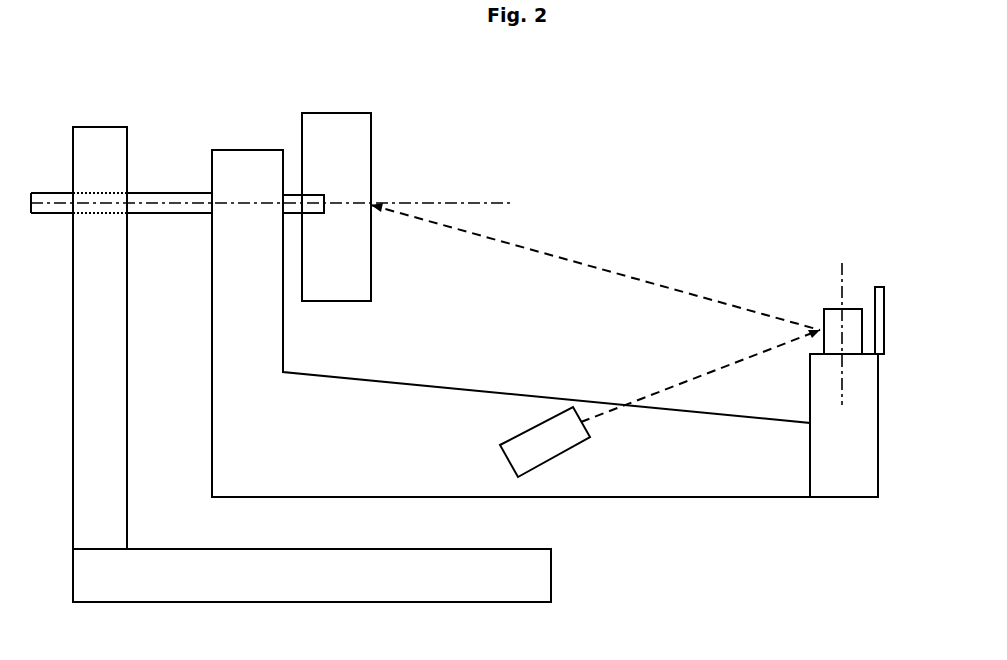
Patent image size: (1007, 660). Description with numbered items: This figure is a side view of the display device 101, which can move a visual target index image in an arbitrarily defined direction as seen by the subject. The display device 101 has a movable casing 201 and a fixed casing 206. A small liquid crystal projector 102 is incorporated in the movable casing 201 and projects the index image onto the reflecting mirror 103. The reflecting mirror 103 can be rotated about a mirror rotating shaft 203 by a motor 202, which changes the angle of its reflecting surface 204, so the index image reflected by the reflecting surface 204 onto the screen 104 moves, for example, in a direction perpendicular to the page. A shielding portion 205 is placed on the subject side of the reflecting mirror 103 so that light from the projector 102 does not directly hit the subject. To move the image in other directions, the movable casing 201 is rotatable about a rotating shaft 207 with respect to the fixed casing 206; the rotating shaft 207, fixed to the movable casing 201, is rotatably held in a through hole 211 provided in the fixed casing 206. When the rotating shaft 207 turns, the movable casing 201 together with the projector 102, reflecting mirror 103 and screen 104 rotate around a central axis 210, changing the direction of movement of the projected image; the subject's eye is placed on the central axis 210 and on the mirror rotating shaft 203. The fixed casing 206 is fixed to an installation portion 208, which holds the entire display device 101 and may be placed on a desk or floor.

The display device 101 is at (593, 156).
The projector 102 is at (510, 442).
The reflecting mirror 103 is at (825, 311).
The screen 104 is at (358, 158).
The movable casing 201 is at (657, 489).
The motor 202 is at (854, 489).
The mirror rotating shaft 203 is at (847, 377).
The reflecting surface 204 is at (824, 318).
The shielding portion 205 is at (885, 315).
The fixed casing 206 is at (117, 134).
The rotating shaft 207 is at (145, 193).
The installation portion 208 is at (139, 557).
The central axis 210 is at (418, 200).
The through hole 211 is at (88, 212).